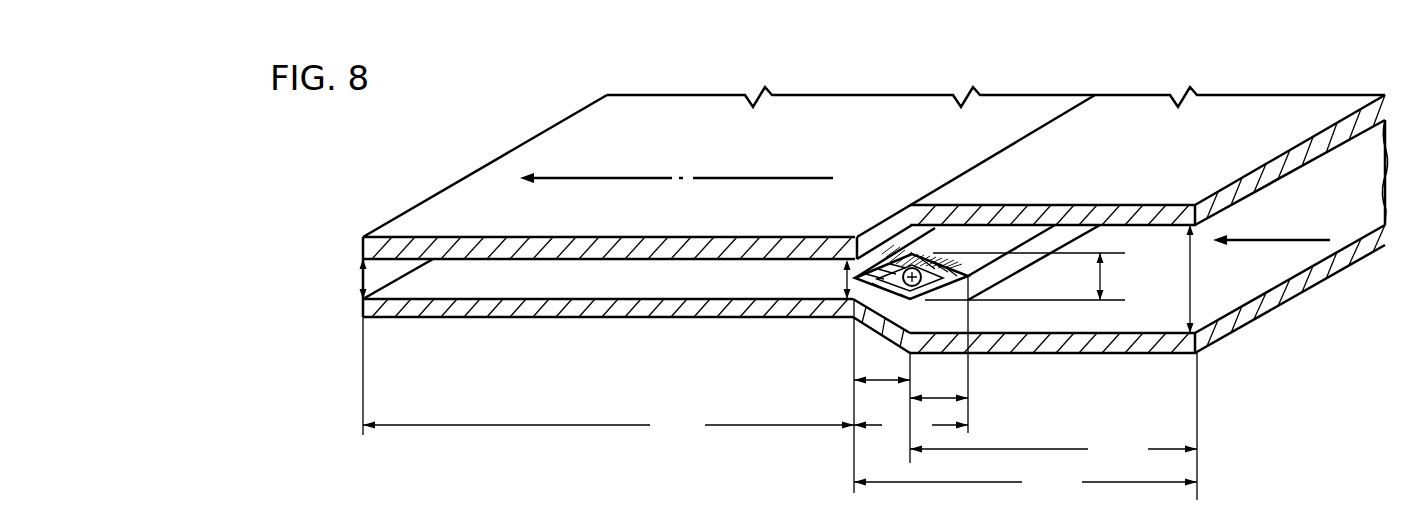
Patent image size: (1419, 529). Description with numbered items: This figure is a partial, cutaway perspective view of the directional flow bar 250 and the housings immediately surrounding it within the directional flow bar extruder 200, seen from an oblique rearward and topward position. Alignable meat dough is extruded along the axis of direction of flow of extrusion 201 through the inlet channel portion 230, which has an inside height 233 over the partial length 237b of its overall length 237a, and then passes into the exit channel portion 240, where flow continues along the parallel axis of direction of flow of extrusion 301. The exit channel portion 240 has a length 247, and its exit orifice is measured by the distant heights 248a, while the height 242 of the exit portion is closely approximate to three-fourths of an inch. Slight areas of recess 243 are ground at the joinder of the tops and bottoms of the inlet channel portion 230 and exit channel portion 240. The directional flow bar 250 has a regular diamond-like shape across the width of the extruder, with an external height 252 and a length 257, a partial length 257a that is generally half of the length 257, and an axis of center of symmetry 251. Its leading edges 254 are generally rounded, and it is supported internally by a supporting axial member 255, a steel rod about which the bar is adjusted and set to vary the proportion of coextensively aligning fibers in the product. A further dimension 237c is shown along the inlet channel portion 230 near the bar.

The directional flow bar extruder 200 is at (1101, 82).
The axis of direction of flow of extrusion 201 is at (1290, 240).
The inlet channel portion 230 is at (1267, 123).
The inside height 233 is at (1193, 293).
The length 237a is at (1025, 485).
The partial length 237b is at (1053, 452).
The bend offset dimension 237c is at (878, 381).
The exit channel portion 240 is at (455, 205).
The height of the exit portion 242 is at (352, 301).
The areas of recess 243 is at (888, 262).
The length 247 is at (608, 427).
The distant heights 248a is at (356, 278).
The directional flow bar 250 is at (890, 334).
The axis of center of symmetry 251 is at (932, 256).
The height 252 is at (1101, 277).
The leading edges 254 is at (852, 262).
The supporting axial member 255 is at (928, 285).
The length 257 is at (911, 427).
The partial length 257a is at (940, 398).
The axis of direction of flow of extrusion 301 is at (615, 175).